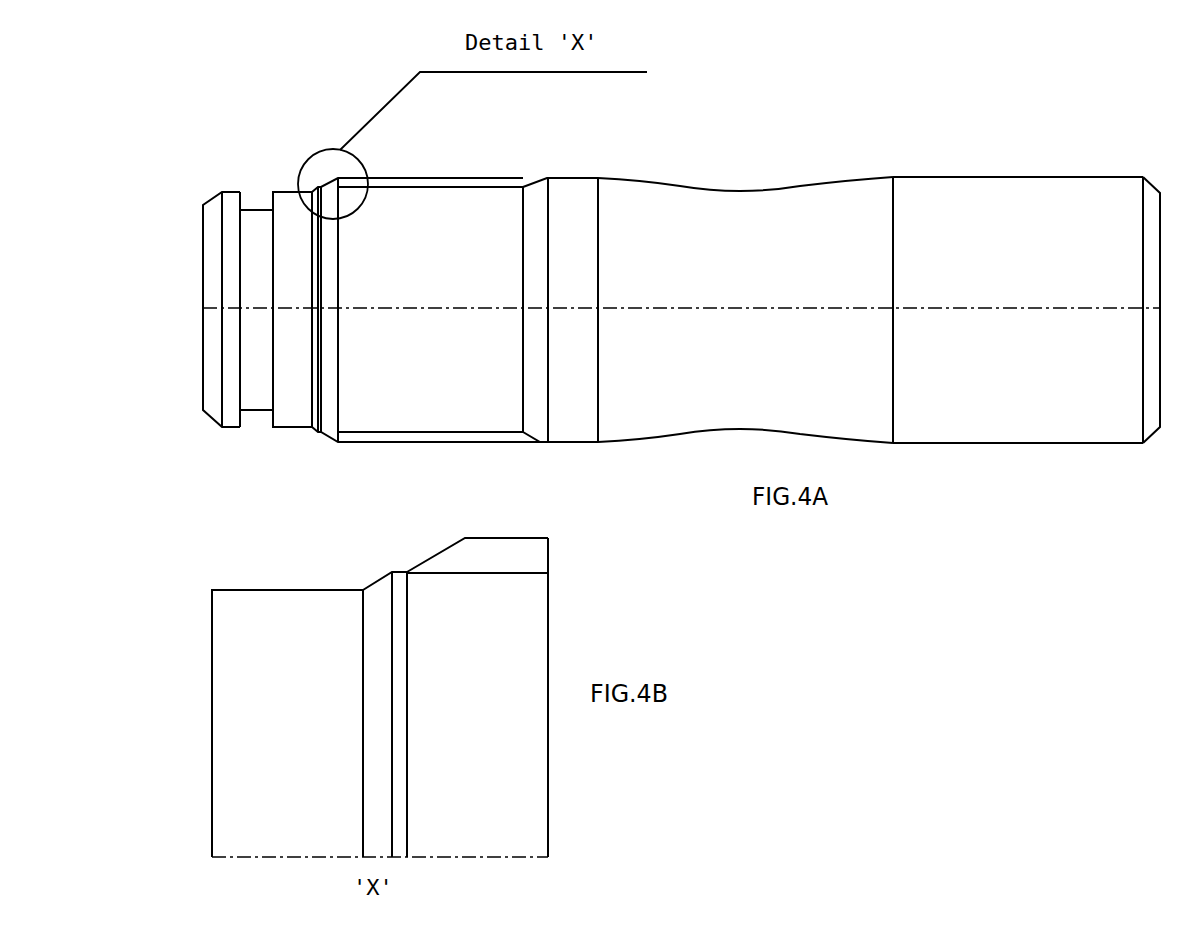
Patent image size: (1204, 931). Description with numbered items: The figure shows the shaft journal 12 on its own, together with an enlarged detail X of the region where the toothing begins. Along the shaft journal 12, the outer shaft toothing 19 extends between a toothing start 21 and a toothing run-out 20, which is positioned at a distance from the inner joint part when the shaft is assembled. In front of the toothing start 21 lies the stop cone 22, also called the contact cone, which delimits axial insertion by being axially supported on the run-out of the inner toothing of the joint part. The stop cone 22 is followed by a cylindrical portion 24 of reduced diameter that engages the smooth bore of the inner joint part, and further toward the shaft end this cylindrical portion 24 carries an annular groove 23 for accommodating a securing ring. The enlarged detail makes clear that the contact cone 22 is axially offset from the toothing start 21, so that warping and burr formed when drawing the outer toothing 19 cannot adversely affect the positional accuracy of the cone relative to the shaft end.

In FIG. 4A, the shaft journal 12 is at (573, 198).
In FIG. 4A, the shaft toothing 19 is at (443, 178).
In FIG. 4B, the shaft toothing 19 is at (495, 553).
In FIG. 4A, the toothing run-out 20 is at (535, 183).
In FIG. 4B, the toothing start 21 is at (443, 552).
In FIG. 4B, the stop cone 22 is at (377, 582).
In FIG. 4A, the annular groove 23 is at (260, 208).
In FIG. 4A, the cylindrical portion 24 is at (278, 190).
In FIG. 4B, the cylindrical portion 24 is at (280, 620).